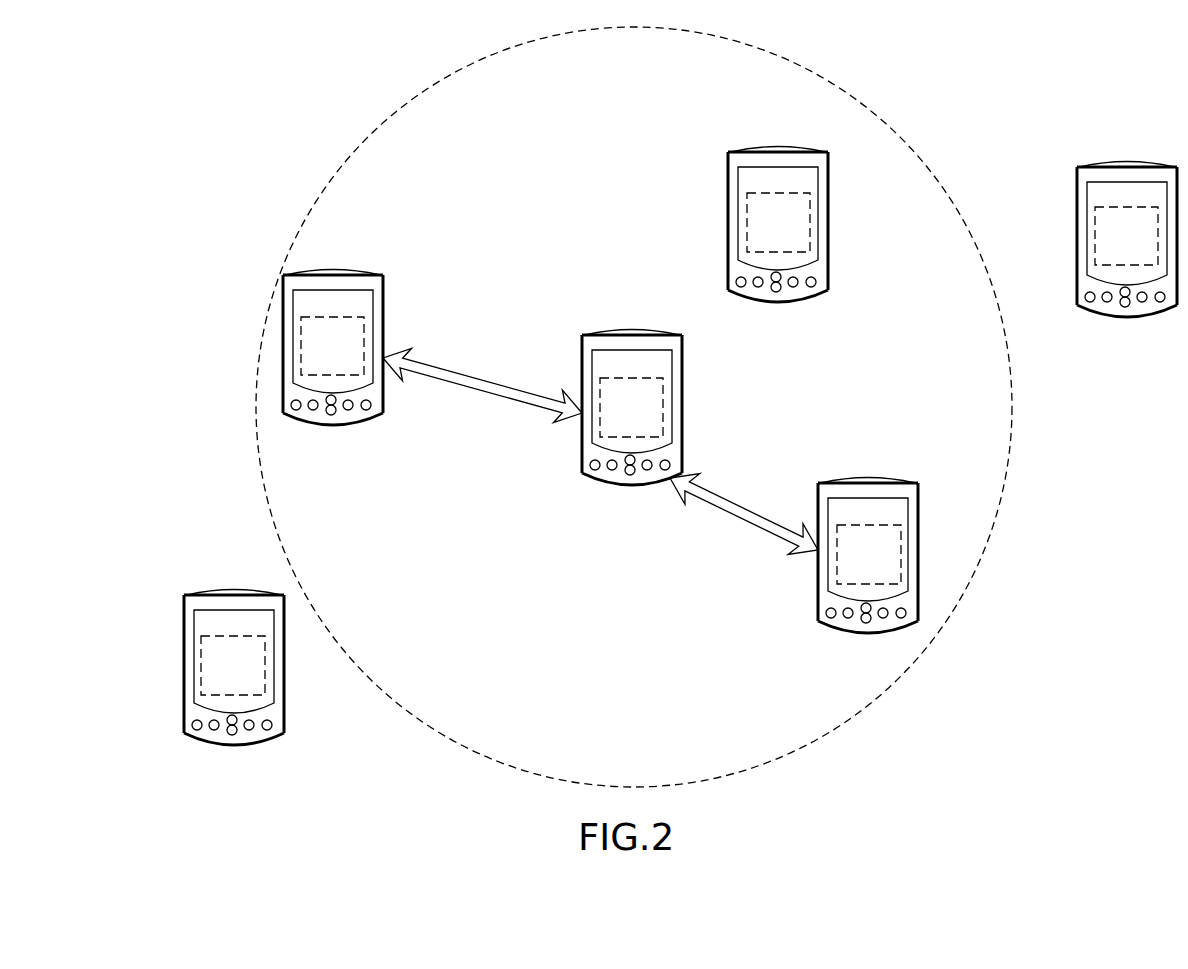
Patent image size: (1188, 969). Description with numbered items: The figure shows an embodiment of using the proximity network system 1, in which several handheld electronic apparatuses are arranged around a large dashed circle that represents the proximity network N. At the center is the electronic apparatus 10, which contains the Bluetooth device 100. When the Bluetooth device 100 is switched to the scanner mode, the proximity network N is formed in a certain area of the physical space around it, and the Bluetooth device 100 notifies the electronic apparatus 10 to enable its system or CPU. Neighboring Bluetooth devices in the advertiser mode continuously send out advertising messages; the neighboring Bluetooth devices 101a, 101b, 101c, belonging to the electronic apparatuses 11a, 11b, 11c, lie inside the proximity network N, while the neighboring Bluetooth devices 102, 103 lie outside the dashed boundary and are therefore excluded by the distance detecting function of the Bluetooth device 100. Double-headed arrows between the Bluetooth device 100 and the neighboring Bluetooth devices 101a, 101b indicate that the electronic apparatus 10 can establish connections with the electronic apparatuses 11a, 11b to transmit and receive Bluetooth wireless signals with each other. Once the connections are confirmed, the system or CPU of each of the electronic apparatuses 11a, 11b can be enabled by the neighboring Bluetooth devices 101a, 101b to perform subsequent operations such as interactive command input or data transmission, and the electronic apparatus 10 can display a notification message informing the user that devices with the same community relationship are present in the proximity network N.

The proximity network system 1 is at (238, 98).
The proximity network N is at (925, 163).
The electronic apparatus 10 is at (636, 340).
The Bluetooth device 100 is at (631, 407).
The electronic apparatus 11a is at (337, 281).
The neighboring Bluetooth device 101a is at (332, 346).
The electronic apparatus 11b is at (873, 487).
The neighboring Bluetooth device 101b is at (869, 554).
The electronic apparatus 11c is at (783, 155).
The neighboring Bluetooth device 101c is at (778, 222).
The neighboring Bluetooth device 102 is at (234, 668).
The neighboring Bluetooth device 103 is at (1127, 240).